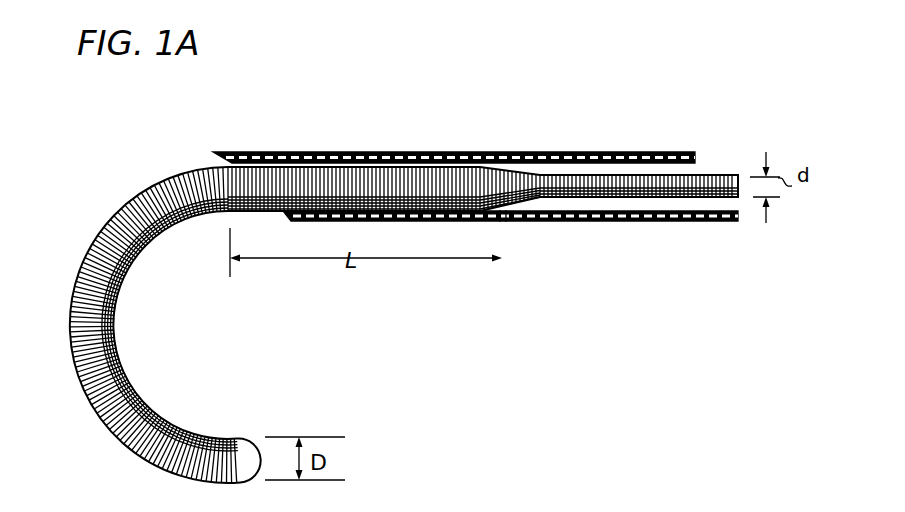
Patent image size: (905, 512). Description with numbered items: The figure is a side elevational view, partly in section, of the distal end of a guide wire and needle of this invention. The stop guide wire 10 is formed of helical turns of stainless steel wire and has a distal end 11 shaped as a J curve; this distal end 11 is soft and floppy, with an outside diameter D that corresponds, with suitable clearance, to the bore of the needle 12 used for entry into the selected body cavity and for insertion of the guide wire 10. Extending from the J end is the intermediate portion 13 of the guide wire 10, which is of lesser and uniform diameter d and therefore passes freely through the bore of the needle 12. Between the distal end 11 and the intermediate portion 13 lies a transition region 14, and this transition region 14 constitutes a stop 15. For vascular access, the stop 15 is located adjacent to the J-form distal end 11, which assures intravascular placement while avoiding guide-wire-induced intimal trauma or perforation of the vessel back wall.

The guide wire 10 is at (414, 287).
The distal end 11 is at (67, 323).
The needle 12 is at (664, 154).
The intermediate portion 13 is at (598, 205).
The transition region 14 is at (521, 205).
The stop 15 is at (503, 228).